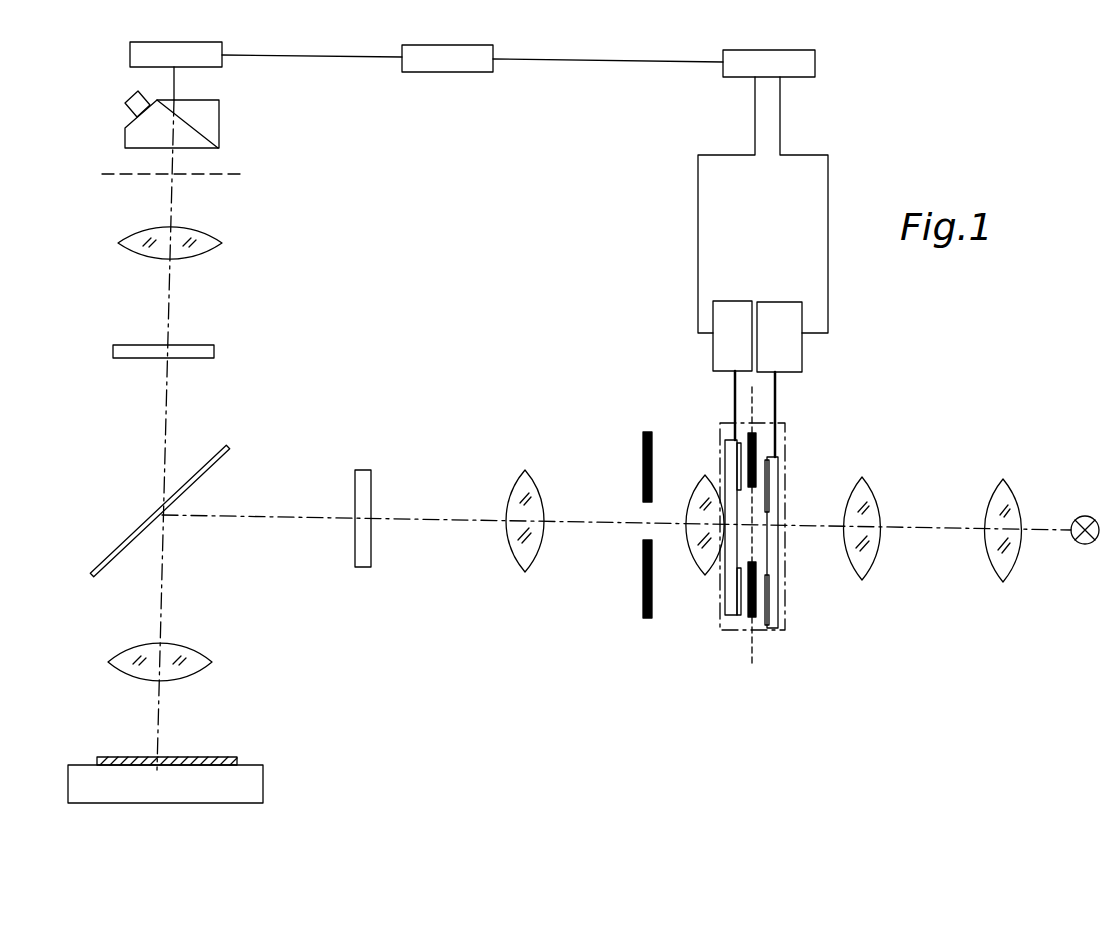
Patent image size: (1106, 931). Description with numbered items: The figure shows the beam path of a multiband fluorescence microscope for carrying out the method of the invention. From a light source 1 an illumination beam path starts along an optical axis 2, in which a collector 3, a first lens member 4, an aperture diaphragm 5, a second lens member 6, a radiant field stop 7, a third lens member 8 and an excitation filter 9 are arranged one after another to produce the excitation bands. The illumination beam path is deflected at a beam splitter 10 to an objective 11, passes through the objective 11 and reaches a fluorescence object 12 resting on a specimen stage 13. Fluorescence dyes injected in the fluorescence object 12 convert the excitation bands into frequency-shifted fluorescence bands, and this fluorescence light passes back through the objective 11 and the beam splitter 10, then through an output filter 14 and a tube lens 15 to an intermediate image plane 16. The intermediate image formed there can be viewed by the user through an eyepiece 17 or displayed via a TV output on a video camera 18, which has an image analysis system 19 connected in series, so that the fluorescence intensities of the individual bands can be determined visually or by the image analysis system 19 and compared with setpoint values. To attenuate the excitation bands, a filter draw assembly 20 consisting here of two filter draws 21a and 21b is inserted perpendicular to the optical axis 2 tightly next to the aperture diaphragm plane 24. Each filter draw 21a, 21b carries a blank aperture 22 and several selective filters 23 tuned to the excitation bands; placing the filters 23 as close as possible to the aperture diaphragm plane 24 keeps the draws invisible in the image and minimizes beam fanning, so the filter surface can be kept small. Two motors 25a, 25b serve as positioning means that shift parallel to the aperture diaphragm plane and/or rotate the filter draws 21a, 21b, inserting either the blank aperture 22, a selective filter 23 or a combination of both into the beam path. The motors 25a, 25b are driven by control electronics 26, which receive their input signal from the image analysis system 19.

The light source 1 is at (1085, 515).
The optical axis 2 is at (891, 527).
The collector 3 is at (1010, 563).
The first lens member 4 is at (868, 567).
The aperture diaphragm 5 is at (750, 450).
The second lens member 6 is at (697, 570).
The radiant field stop 7 is at (642, 590).
The third lens member 8 is at (517, 565).
The excitation filter 9 is at (358, 567).
The beam splitter 10 is at (105, 553).
The objective 11 is at (207, 660).
The fluorescence object 12 is at (220, 757).
The specimen stage 13 is at (257, 790).
The output filter 14 is at (214, 352).
The tube lens 15 is at (215, 245).
The intermediate image plane 16 is at (212, 178).
The eyepiece 17 is at (133, 98).
The video camera 18 is at (213, 60).
The image analysis system 19 is at (440, 63).
The filter draw assembly 20 is at (757, 633).
The first filter draw 21a is at (732, 455).
The second filter draw 21b is at (777, 480).
The blank aperture 22 is at (739, 455).
The selective filters 23 is at (741, 480).
The aperture diaphragm plane 24 is at (778, 390).
The first motor 25a is at (730, 310).
The second motor 25b is at (783, 310).
The control electronics 26 is at (743, 68).